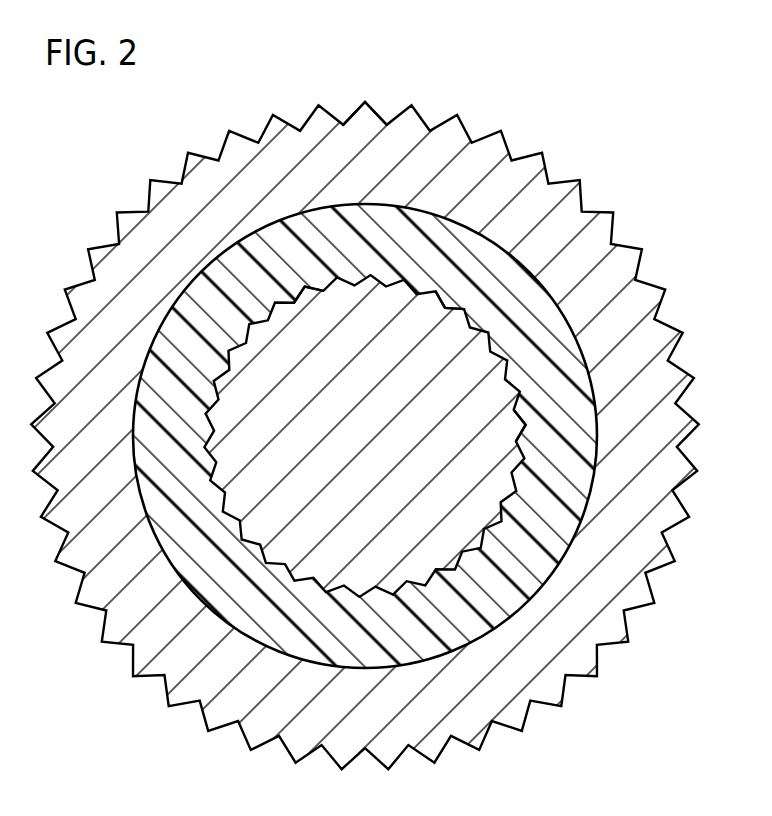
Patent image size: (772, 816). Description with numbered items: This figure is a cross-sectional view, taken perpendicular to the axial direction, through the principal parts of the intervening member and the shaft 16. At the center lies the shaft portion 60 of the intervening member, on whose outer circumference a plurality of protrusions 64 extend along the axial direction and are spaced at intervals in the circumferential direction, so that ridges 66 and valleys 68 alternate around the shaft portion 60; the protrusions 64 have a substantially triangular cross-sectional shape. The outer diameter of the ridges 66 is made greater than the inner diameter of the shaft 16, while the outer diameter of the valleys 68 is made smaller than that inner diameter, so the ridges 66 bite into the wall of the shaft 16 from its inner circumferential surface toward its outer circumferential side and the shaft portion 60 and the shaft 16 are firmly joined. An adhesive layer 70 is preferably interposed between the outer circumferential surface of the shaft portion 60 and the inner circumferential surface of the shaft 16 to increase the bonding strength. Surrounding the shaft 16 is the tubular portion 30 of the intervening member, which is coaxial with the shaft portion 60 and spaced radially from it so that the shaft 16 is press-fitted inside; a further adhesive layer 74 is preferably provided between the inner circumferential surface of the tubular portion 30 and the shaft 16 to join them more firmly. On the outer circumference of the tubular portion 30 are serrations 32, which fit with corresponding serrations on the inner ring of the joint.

The tubular portion 30 is at (563, 255).
The serrations 32 is at (362, 104).
The adhesive layer 74 is at (267, 227).
The shaft 16 is at (538, 310).
The shaft portion 60 is at (470, 398).
The protrusions 64 is at (513, 420).
The ridges 66 is at (443, 306).
The valleys 68 is at (446, 307).
The adhesive layer 70 is at (305, 286).